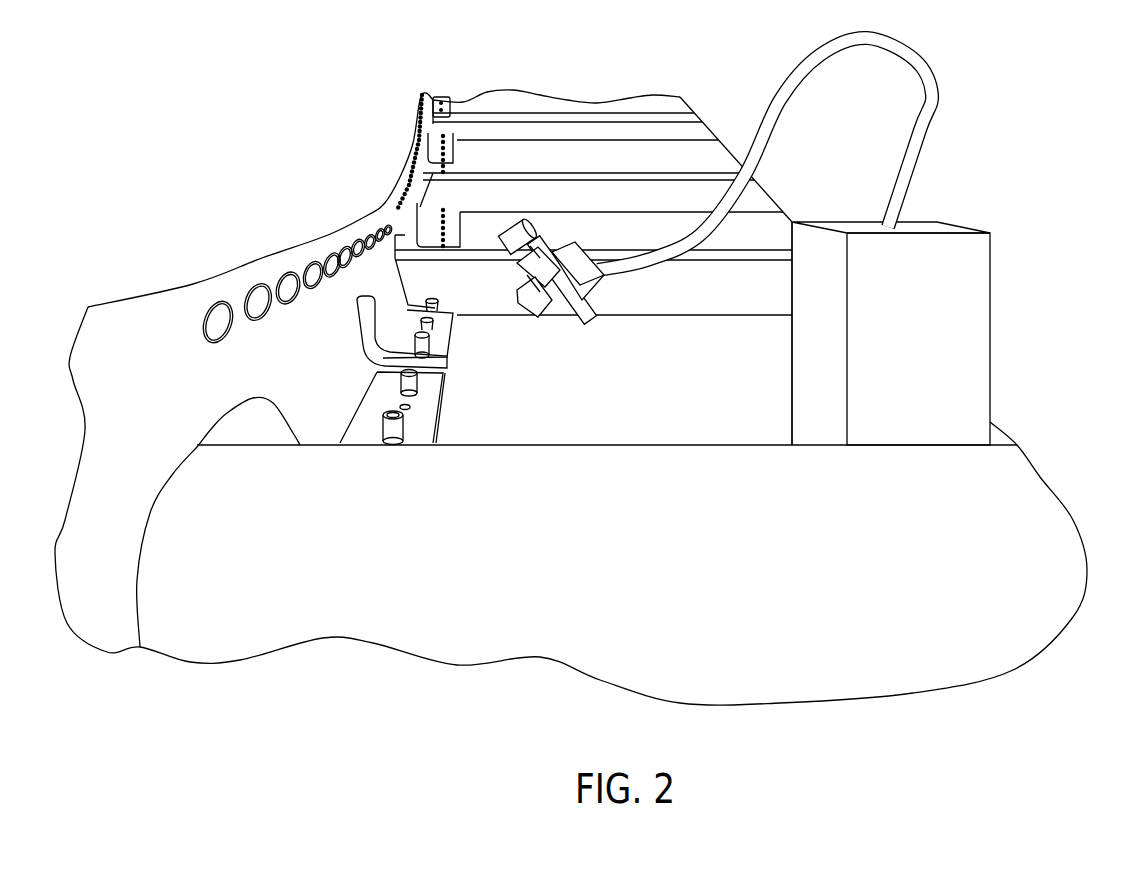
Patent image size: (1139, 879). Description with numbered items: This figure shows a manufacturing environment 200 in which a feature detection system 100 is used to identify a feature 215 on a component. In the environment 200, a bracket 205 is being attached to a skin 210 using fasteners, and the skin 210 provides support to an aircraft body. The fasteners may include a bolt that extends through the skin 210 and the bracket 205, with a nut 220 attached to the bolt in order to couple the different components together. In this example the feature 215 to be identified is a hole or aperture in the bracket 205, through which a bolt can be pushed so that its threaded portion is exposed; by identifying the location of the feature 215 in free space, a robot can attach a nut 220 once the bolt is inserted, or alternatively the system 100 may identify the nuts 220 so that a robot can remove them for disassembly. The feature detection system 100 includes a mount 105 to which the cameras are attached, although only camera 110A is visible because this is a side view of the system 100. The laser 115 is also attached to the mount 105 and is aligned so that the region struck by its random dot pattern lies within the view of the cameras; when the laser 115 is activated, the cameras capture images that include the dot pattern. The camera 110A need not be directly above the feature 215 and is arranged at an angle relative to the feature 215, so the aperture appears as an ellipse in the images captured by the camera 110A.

The feature detection system 100 is at (933, 361).
The mount 105 is at (588, 328).
The left camera 110A is at (520, 313).
The laser 115 is at (512, 228).
The manufacturing environment 200 is at (351, 147).
The bracket 205 is at (262, 258).
The skin 210 is at (722, 400).
The feature 215 is at (410, 407).
The nut 220 is at (390, 410).